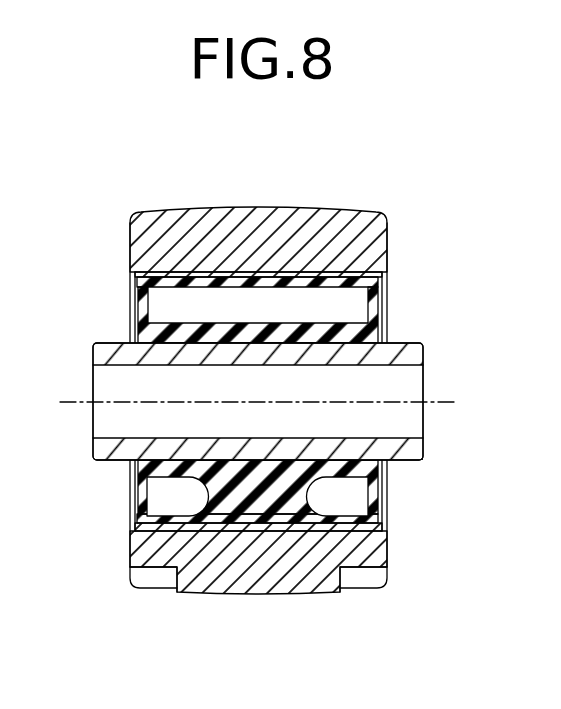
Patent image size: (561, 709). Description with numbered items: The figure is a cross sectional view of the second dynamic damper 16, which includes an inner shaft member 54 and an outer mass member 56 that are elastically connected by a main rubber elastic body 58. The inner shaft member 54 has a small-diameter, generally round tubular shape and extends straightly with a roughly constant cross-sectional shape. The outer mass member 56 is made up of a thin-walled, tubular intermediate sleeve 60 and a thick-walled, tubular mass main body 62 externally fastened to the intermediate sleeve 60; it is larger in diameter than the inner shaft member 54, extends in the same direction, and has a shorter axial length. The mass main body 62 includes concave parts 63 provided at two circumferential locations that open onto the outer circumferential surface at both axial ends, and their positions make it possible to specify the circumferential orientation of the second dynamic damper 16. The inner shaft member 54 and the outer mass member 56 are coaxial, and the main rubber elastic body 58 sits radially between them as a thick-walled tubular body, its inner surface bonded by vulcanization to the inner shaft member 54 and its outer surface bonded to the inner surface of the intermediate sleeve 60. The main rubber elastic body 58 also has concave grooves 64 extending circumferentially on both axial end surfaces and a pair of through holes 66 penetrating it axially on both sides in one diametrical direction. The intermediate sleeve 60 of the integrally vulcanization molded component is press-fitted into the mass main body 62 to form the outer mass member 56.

The second dynamic damper 16 is at (285, 401).
The inner shaft member 54 is at (108, 355).
The outer mass member 56 is at (246, 400).
The main rubber elastic body 58 is at (259, 472).
The intermediate sleeve 60 is at (296, 272).
The mass main body 62 is at (231, 242).
The concave part 63 is at (166, 587).
The concave groove 64 is at (166, 507).
The through hole 66 is at (325, 289).